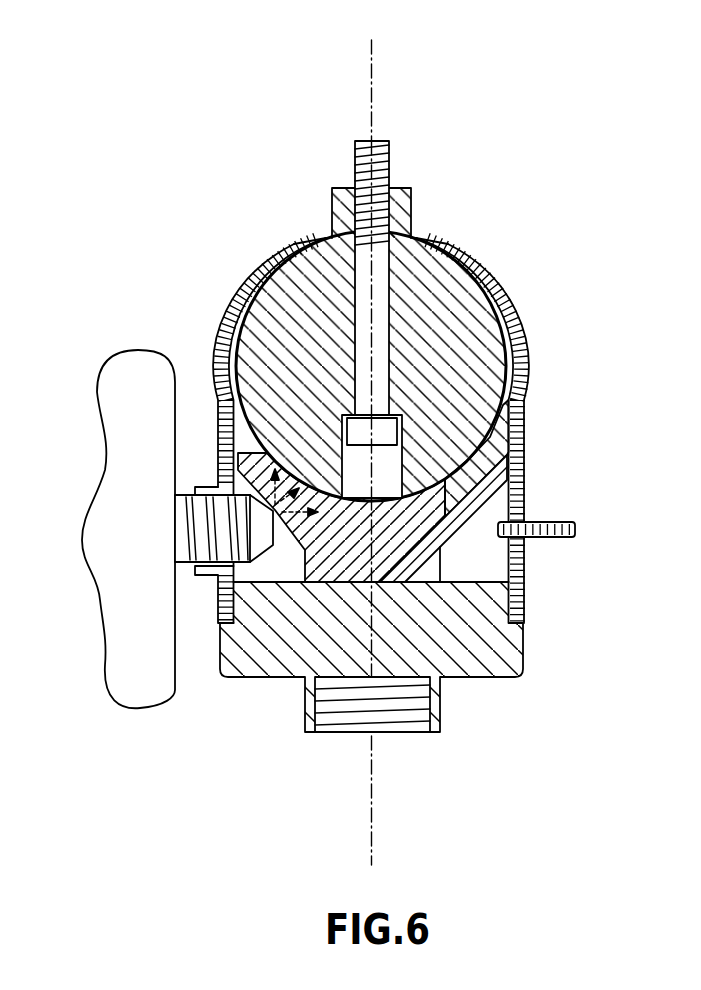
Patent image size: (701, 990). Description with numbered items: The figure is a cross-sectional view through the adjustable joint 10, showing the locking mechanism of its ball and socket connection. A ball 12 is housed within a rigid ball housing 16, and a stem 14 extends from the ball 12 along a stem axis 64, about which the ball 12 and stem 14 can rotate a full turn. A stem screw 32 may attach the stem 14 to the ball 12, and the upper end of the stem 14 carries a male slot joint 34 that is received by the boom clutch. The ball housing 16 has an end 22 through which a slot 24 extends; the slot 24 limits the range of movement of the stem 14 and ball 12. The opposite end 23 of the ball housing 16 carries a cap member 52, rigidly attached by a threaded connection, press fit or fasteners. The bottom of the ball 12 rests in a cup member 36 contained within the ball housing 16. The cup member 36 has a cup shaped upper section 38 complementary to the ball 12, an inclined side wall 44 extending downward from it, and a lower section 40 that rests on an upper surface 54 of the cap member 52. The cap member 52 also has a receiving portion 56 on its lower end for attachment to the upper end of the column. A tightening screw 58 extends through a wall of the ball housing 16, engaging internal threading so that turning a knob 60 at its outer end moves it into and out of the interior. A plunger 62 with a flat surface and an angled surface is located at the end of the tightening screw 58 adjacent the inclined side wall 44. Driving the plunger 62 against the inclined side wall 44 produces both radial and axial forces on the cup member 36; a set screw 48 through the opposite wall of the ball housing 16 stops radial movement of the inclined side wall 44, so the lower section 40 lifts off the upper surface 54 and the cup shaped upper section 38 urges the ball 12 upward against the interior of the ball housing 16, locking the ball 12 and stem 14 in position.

The adjustable joint 10 is at (531, 186).
The ball 12 is at (452, 303).
The stem 14 is at (412, 217).
The ball housing 16 is at (522, 318).
The end 22 is at (302, 237).
The end 23 is at (220, 637).
The slot 24 is at (325, 238).
The stem screw 32 is at (362, 308).
The male slot joint 34 is at (380, 160).
The cup member 36 is at (482, 455).
The cup shaped upper section 38 is at (453, 458).
The lower section 40 is at (440, 557).
The inclined side wall 44 is at (490, 508).
The set screw 48 is at (575, 530).
The cap member 52 is at (472, 660).
The upper surface 54 is at (487, 583).
The receiving portion 56 is at (392, 733).
The tightening screw 58 is at (210, 514).
The knob 60 is at (126, 655).
The plunger 62 is at (260, 553).
The stem axis 64 is at (372, 60).